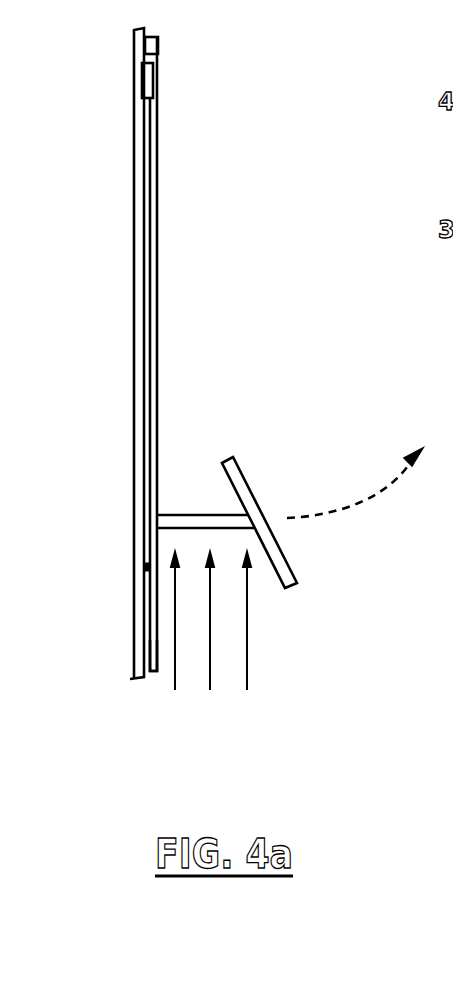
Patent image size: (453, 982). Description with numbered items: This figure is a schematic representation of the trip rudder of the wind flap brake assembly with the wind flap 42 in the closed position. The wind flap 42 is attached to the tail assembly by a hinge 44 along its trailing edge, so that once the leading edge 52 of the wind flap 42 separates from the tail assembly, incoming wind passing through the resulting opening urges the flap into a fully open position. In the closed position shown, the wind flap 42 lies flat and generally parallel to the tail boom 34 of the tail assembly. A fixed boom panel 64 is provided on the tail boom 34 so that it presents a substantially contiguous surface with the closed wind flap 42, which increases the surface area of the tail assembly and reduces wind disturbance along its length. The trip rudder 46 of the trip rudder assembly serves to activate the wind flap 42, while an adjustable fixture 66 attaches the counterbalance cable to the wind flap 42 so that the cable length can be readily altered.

The tail boom 34 is at (141, 231).
The wind flap 42 is at (157, 250).
The hinge 44 is at (143, 82).
The trip rudder 46 is at (243, 492).
The leading edge 52 is at (150, 567).
The fixed boom panel 64 is at (148, 655).
The adjustable fixture 66 is at (150, 567).